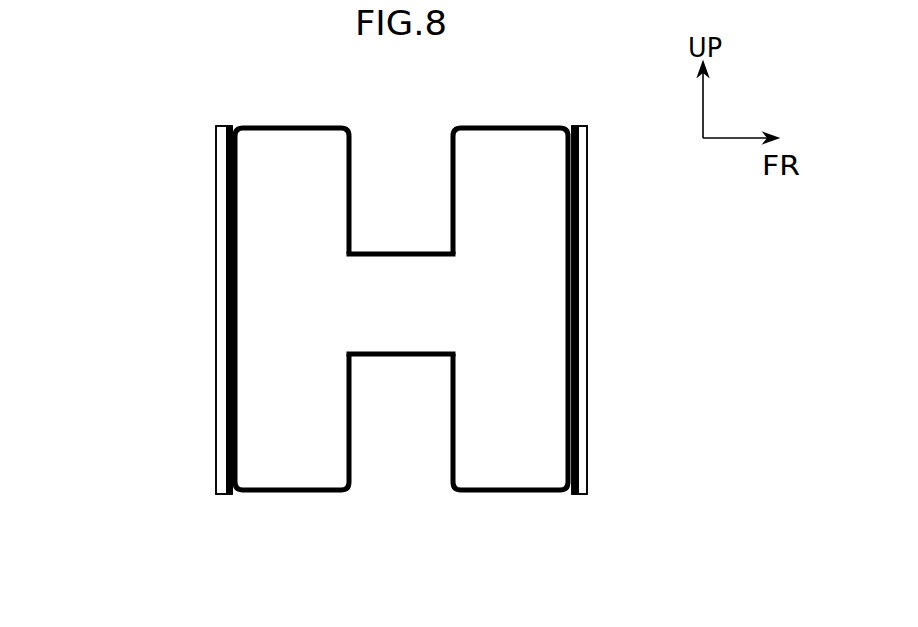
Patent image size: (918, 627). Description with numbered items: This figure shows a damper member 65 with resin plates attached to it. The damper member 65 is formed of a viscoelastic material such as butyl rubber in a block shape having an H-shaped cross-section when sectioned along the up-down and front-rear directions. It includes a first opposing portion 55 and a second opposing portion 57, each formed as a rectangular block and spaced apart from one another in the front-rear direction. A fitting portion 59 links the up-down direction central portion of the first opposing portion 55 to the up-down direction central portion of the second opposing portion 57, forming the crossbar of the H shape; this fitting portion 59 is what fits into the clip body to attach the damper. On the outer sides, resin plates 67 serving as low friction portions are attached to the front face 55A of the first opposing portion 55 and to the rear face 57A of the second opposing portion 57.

The damper member 65 is at (426, 361).
The rear face of the second opposing portion 57A is at (212, 222).
The front face of the first opposing portion 55A is at (578, 283).
The resin plates 67 is at (213, 405).
The second opposing portion 57 is at (295, 463).
The first opposing portion 55 is at (519, 469).
The fitting portion 59 is at (401, 292).